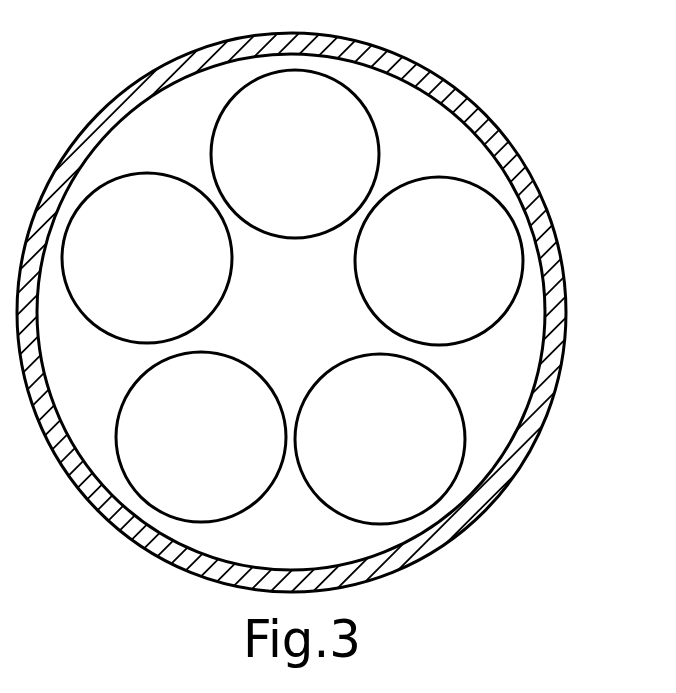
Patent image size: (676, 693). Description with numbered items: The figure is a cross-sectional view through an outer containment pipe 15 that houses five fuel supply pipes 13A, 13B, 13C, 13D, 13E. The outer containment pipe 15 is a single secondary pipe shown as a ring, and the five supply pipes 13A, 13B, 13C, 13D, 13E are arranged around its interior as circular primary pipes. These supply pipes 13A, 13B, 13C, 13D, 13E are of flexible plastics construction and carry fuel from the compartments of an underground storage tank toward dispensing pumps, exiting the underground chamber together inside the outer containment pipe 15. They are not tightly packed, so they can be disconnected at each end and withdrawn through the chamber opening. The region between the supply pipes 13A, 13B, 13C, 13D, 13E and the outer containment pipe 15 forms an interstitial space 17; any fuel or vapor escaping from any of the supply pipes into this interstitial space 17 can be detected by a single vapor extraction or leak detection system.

The outer containment pipe 15 is at (521, 447).
The fuel supply pipe 13A is at (328, 172).
The fuel supply pipe 13B is at (473, 278).
The fuel supply pipe 13C is at (418, 455).
The fuel supply pipe 13D is at (238, 451).
The fuel supply pipe 13E is at (180, 275).
The interstitial space 17 is at (307, 318).